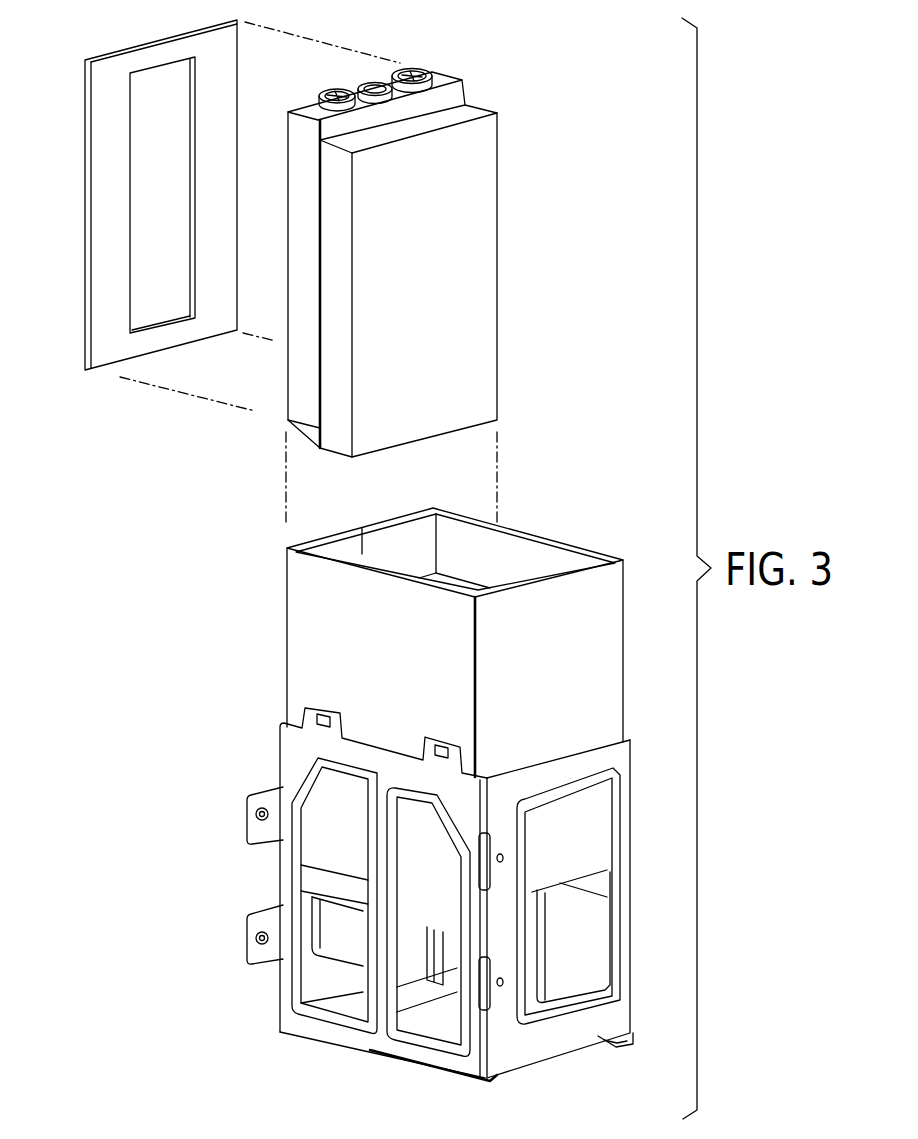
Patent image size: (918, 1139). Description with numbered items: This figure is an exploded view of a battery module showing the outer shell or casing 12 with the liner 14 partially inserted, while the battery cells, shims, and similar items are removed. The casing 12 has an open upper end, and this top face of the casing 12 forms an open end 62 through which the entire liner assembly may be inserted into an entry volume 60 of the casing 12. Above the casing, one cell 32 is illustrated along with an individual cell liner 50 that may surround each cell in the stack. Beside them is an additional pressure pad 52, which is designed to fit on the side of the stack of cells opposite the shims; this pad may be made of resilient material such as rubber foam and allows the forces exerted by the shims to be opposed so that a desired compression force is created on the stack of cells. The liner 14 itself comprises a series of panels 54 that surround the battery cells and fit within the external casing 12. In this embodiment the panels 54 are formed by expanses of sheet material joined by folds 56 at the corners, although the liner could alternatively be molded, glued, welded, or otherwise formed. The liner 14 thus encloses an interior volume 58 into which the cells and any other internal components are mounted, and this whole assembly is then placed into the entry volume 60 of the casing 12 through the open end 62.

The casing 12 is at (467, 894).
The liner 14 is at (454, 633).
The cell 32 is at (447, 79).
The cell liner 50 is at (420, 253).
The pressure pad 52 is at (88, 280).
The panels 54 is at (395, 518).
The folds 56 is at (507, 527).
The interior volume 58 is at (547, 562).
The entry volume 60 is at (593, 935).
The open end 62 is at (627, 741).